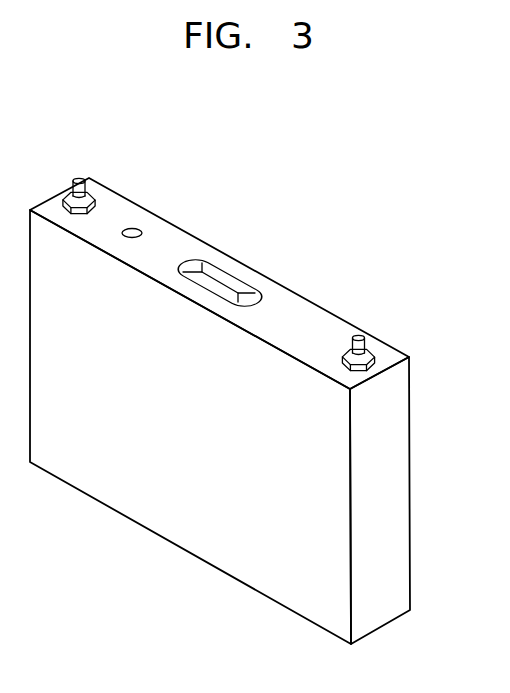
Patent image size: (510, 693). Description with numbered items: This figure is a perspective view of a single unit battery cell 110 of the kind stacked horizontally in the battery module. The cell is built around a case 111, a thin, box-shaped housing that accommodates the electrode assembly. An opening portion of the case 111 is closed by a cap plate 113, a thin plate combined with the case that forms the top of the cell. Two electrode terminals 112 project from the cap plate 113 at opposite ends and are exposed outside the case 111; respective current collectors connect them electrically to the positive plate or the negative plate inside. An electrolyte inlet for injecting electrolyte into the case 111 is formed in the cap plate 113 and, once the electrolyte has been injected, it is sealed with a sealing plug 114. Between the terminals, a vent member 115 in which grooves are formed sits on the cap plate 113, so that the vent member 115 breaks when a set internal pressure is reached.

The unit battery cell 110 is at (421, 316).
The case 111 is at (185, 530).
The electrode terminal 112 is at (82, 181).
The cap plate 113 is at (298, 308).
The sealing plug 114 is at (135, 228).
The vent member 115 is at (228, 277).